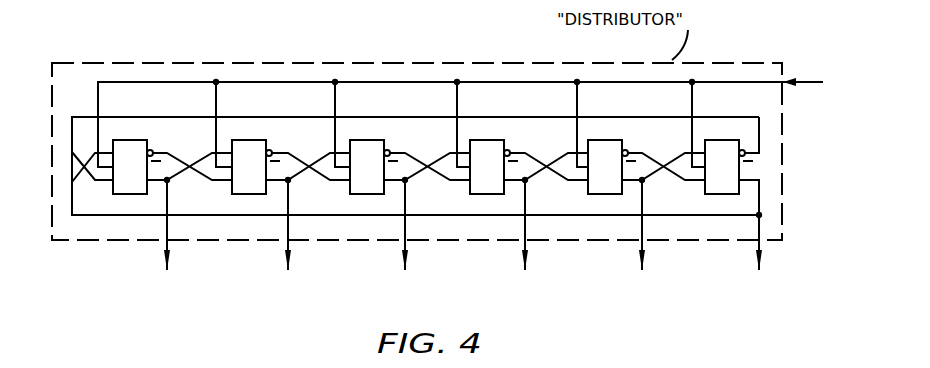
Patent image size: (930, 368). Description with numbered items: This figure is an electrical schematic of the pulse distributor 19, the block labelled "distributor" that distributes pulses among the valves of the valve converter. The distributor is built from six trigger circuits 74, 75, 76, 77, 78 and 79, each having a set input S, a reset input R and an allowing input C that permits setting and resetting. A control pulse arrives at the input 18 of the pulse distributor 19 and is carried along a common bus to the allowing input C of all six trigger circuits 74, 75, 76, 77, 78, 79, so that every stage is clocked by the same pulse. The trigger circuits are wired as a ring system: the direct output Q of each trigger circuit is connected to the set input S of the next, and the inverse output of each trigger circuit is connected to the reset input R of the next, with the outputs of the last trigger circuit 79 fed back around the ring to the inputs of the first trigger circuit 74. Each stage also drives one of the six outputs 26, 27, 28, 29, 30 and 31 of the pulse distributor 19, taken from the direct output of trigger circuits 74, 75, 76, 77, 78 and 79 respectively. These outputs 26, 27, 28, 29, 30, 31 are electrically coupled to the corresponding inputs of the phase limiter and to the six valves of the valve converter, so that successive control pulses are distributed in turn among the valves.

The input 18 is at (785, 80).
The pulse distributor 19 is at (190, 60).
The trigger circuit 74 is at (142, 140).
The trigger circuit 75 is at (259, 140).
The trigger circuit 76 is at (378, 140).
The trigger circuit 77 is at (498, 140).
The trigger circuit 78 is at (616, 140).
The trigger circuit 79 is at (722, 140).
The output 26 is at (171, 256).
The output 27 is at (292, 256).
The output 28 is at (409, 256).
The output 29 is at (529, 256).
The output 30 is at (646, 256).
The output 31 is at (763, 256).